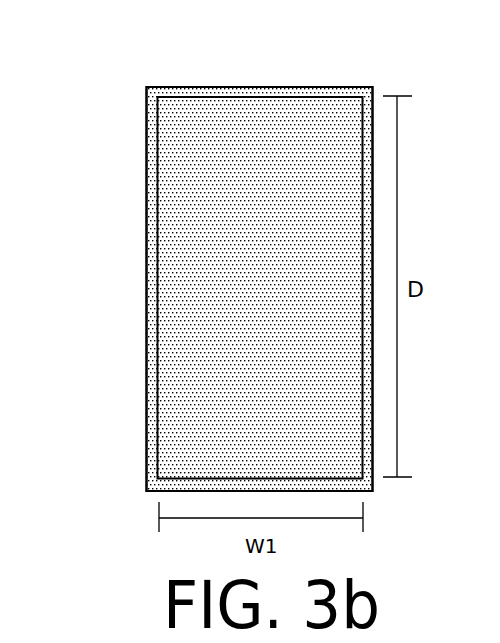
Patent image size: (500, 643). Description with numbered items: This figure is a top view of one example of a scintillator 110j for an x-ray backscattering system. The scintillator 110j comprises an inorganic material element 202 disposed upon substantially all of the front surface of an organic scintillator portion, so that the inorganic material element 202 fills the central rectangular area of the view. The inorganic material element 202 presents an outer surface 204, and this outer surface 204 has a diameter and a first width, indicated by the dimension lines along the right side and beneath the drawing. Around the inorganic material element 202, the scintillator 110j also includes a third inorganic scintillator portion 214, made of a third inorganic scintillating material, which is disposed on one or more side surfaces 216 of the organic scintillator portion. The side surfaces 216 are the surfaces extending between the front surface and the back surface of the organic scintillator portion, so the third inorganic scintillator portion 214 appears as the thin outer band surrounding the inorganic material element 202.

The scintillator 110j is at (302, 48).
The inorganic material element 202 is at (158, 355).
The outer surface 204 is at (185, 263).
The third inorganic scintillator portion 214 is at (151, 140).
The side surfaces 216 is at (362, 108).